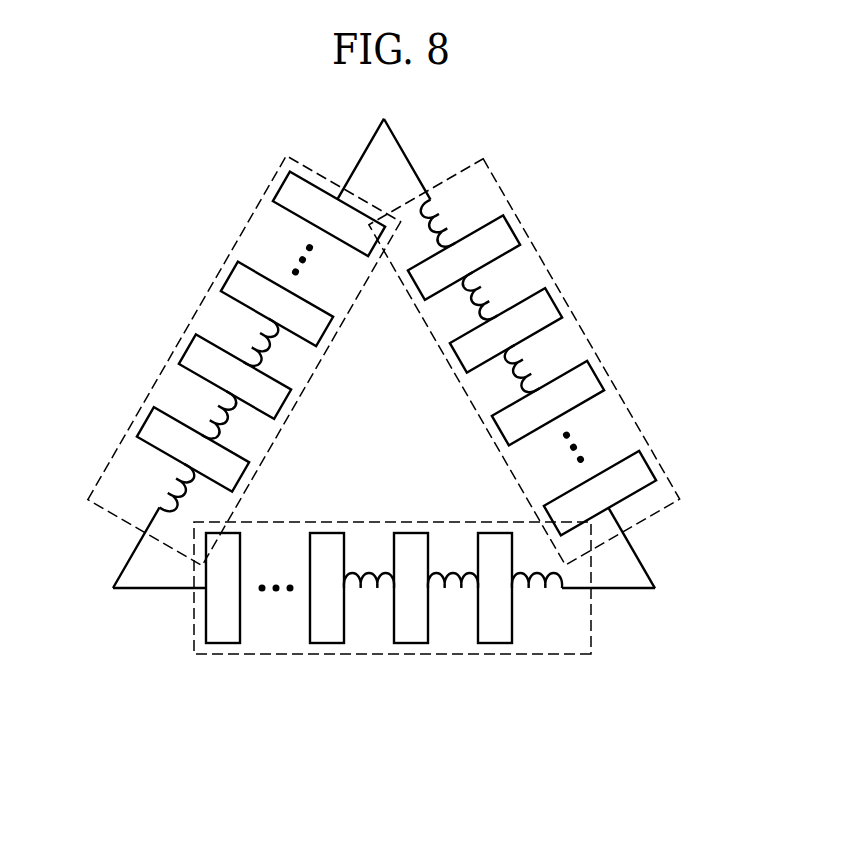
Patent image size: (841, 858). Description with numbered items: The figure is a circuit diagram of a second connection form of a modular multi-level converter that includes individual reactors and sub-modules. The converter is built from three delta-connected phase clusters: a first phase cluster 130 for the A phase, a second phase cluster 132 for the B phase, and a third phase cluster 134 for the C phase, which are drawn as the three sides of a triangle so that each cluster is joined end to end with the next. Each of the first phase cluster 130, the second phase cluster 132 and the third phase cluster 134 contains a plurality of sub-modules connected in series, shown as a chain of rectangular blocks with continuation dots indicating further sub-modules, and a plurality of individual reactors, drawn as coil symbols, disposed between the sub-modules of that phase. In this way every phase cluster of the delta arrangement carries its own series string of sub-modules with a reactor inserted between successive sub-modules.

The first phase cluster 130 is at (237, 245).
The second phase cluster 132 is at (587, 332).
The third phase cluster 134 is at (383, 656).